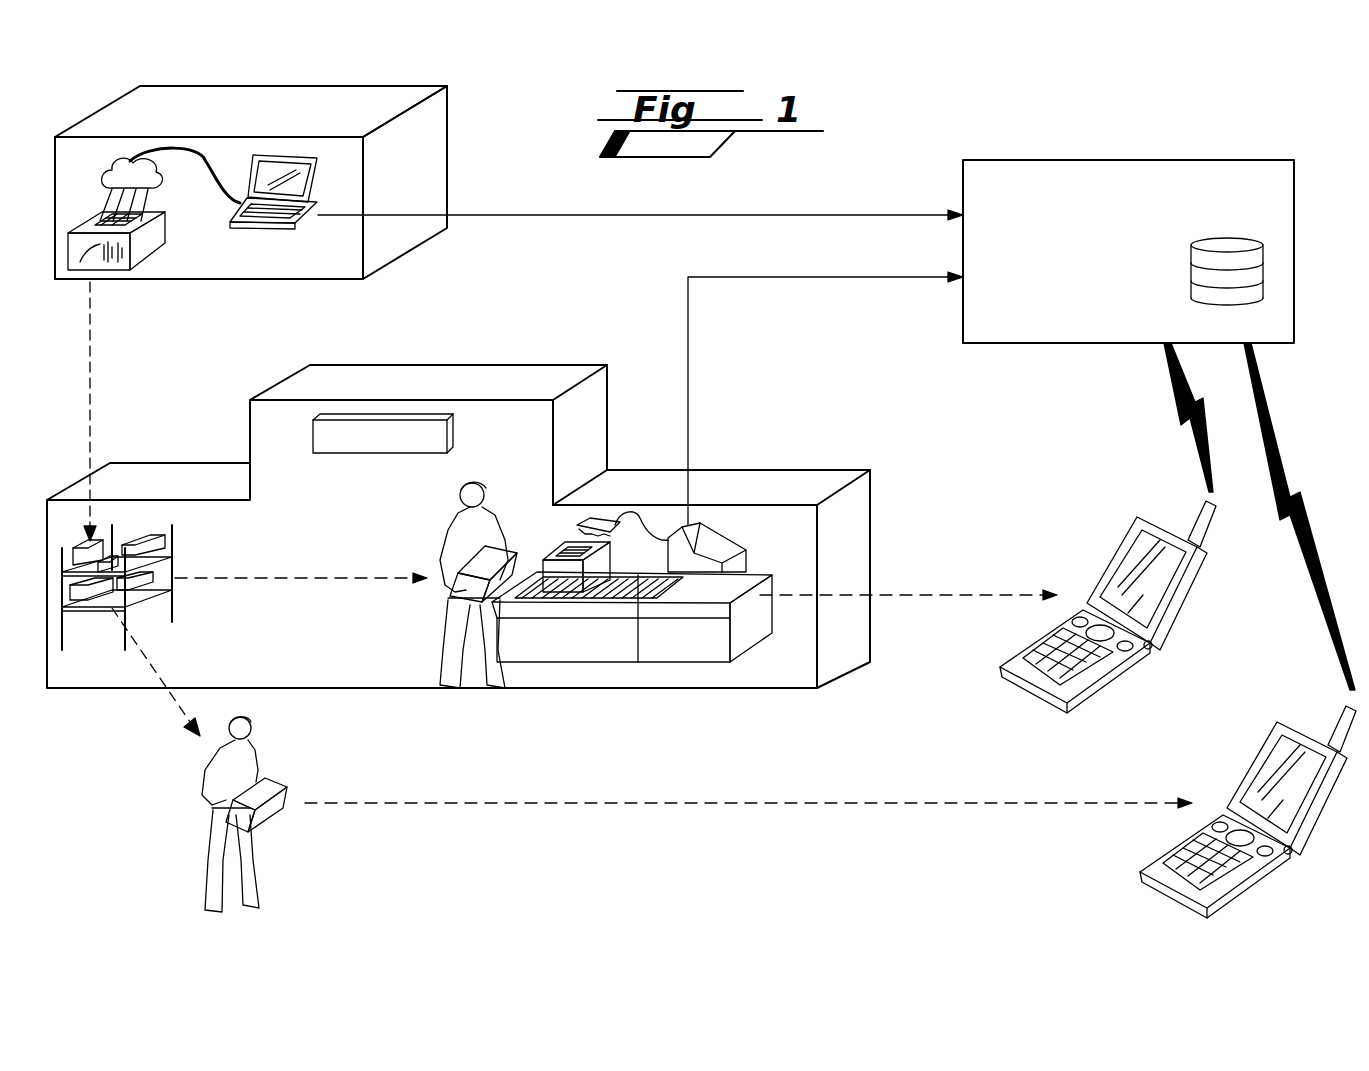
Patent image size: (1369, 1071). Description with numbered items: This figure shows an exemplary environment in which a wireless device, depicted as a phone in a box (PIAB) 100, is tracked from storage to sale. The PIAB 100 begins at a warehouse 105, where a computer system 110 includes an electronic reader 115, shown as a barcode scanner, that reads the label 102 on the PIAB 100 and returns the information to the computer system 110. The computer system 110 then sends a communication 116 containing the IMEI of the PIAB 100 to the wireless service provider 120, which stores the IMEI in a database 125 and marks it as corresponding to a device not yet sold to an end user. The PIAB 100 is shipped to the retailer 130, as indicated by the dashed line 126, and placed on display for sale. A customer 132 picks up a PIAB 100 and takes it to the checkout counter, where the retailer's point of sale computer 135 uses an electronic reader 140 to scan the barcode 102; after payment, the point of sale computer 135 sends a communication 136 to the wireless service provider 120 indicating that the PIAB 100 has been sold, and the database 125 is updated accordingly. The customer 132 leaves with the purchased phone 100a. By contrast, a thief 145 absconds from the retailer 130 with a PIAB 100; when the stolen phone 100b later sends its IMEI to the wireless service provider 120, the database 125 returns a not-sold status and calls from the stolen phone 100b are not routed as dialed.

The phone in a box (PIAB) 100 is at (197, 232).
The purchased phone 100a is at (470, 645).
The stolen phone 100b is at (1167, 847).
The label 102 is at (102, 218).
The warehouse 105 is at (449, 150).
The computer system 110 is at (253, 230).
The electronic reader 115 is at (157, 190).
The communication 116 is at (810, 213).
The wireless service provider 120 is at (1148, 160).
The database 125 is at (1222, 245).
The dashed line 126 is at (92, 380).
The retailer 130 is at (375, 364).
The customer 132 is at (452, 488).
The point of sale computer 135 is at (713, 537).
The communication 136 is at (723, 277).
The electronic reader 140 is at (594, 520).
The thief 145 is at (206, 758).